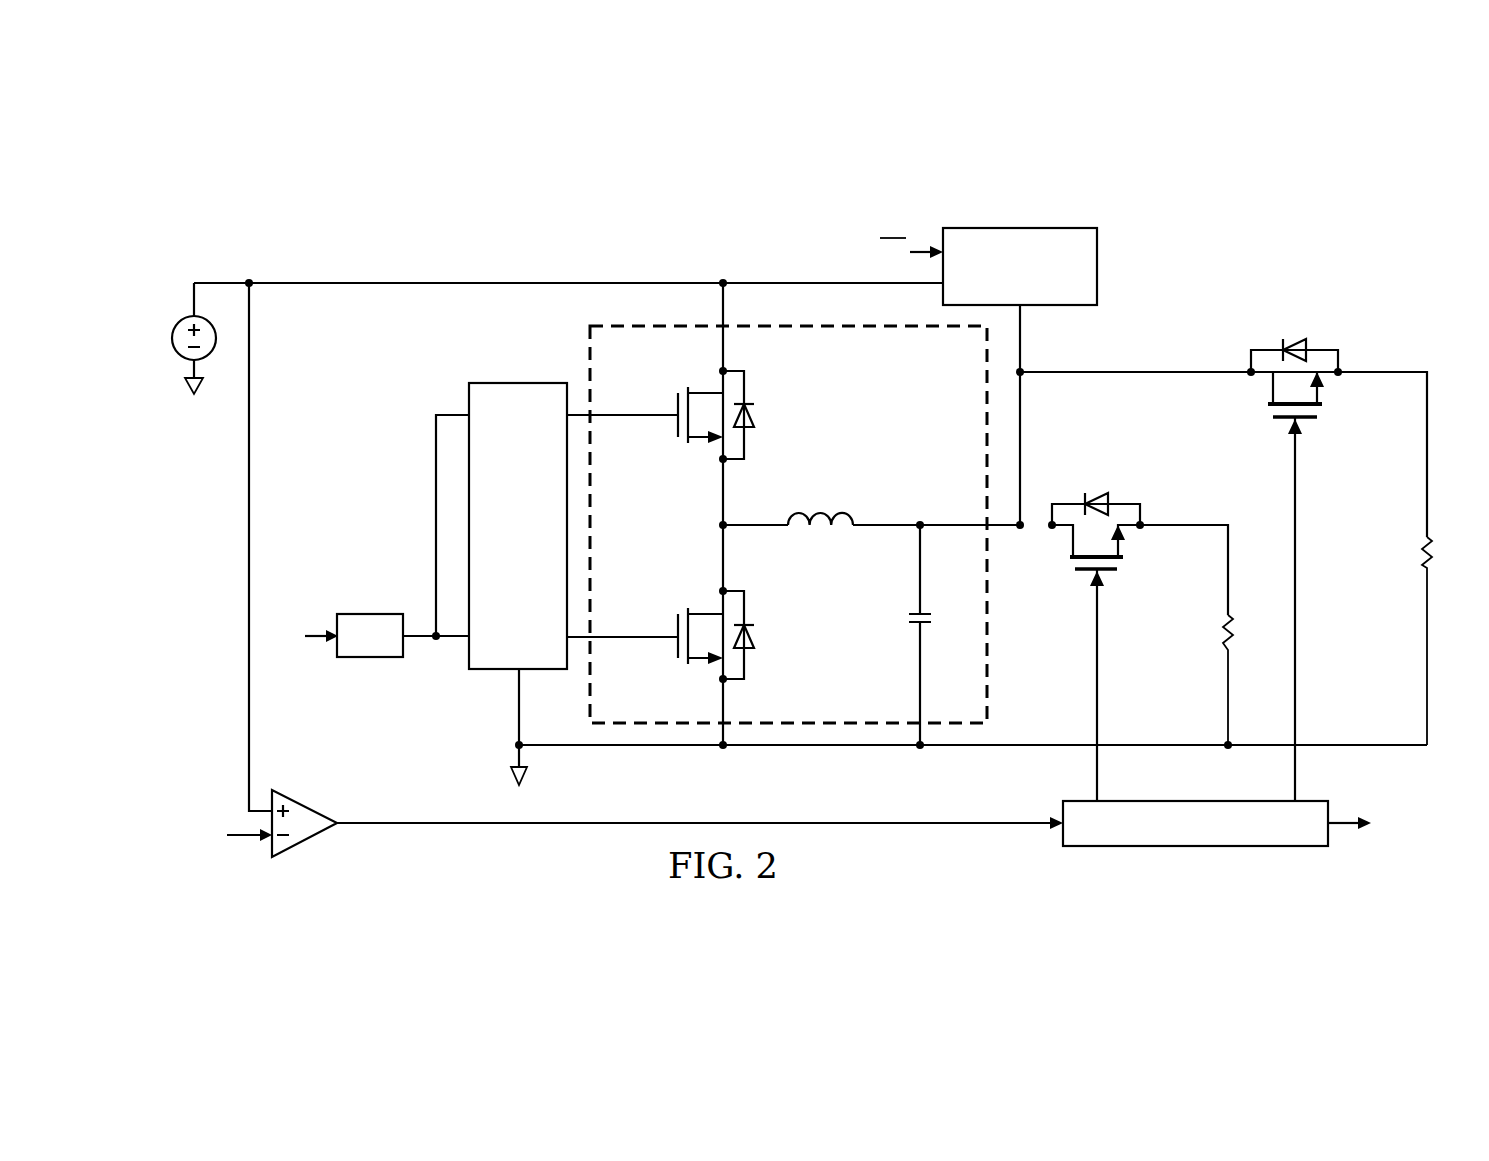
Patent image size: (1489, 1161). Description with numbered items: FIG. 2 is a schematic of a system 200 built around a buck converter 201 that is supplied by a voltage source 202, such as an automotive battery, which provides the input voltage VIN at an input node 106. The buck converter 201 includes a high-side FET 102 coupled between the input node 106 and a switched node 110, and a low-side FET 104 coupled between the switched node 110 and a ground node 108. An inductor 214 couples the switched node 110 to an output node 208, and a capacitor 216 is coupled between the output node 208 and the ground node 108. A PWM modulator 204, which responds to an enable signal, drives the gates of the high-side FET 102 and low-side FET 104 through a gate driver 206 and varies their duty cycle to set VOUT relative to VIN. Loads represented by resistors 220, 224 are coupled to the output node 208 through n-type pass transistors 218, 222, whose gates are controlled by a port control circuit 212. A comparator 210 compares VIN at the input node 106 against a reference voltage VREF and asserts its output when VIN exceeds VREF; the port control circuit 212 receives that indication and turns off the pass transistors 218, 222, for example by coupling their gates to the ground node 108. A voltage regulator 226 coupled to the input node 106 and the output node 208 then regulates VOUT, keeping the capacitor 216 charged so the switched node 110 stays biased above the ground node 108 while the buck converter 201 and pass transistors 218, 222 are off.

The system 200 is at (476, 185).
The voltage source 202 is at (172, 338).
The input node 106 is at (253, 287).
The buck converter 201 is at (888, 396).
The high-side FET 102 is at (674, 425).
The low-side FET 104 is at (674, 646).
The switched node 110 is at (728, 531).
The inductor 214 is at (830, 510).
The output node 208 is at (926, 531).
The capacitor 216 is at (908, 620).
The PWM modulator 204 is at (357, 614).
The gate driver 206 is at (539, 566).
The ground node 108 is at (513, 771).
The comparator 210 is at (307, 843).
The voltage regulator 226 is at (1032, 228).
The pass transistor 218 is at (1110, 574).
The load 220 is at (1223, 627).
The pass transistor 222 is at (1307, 422).
The load 224 is at (1422, 549).
The port control circuit 212 is at (1197, 848).